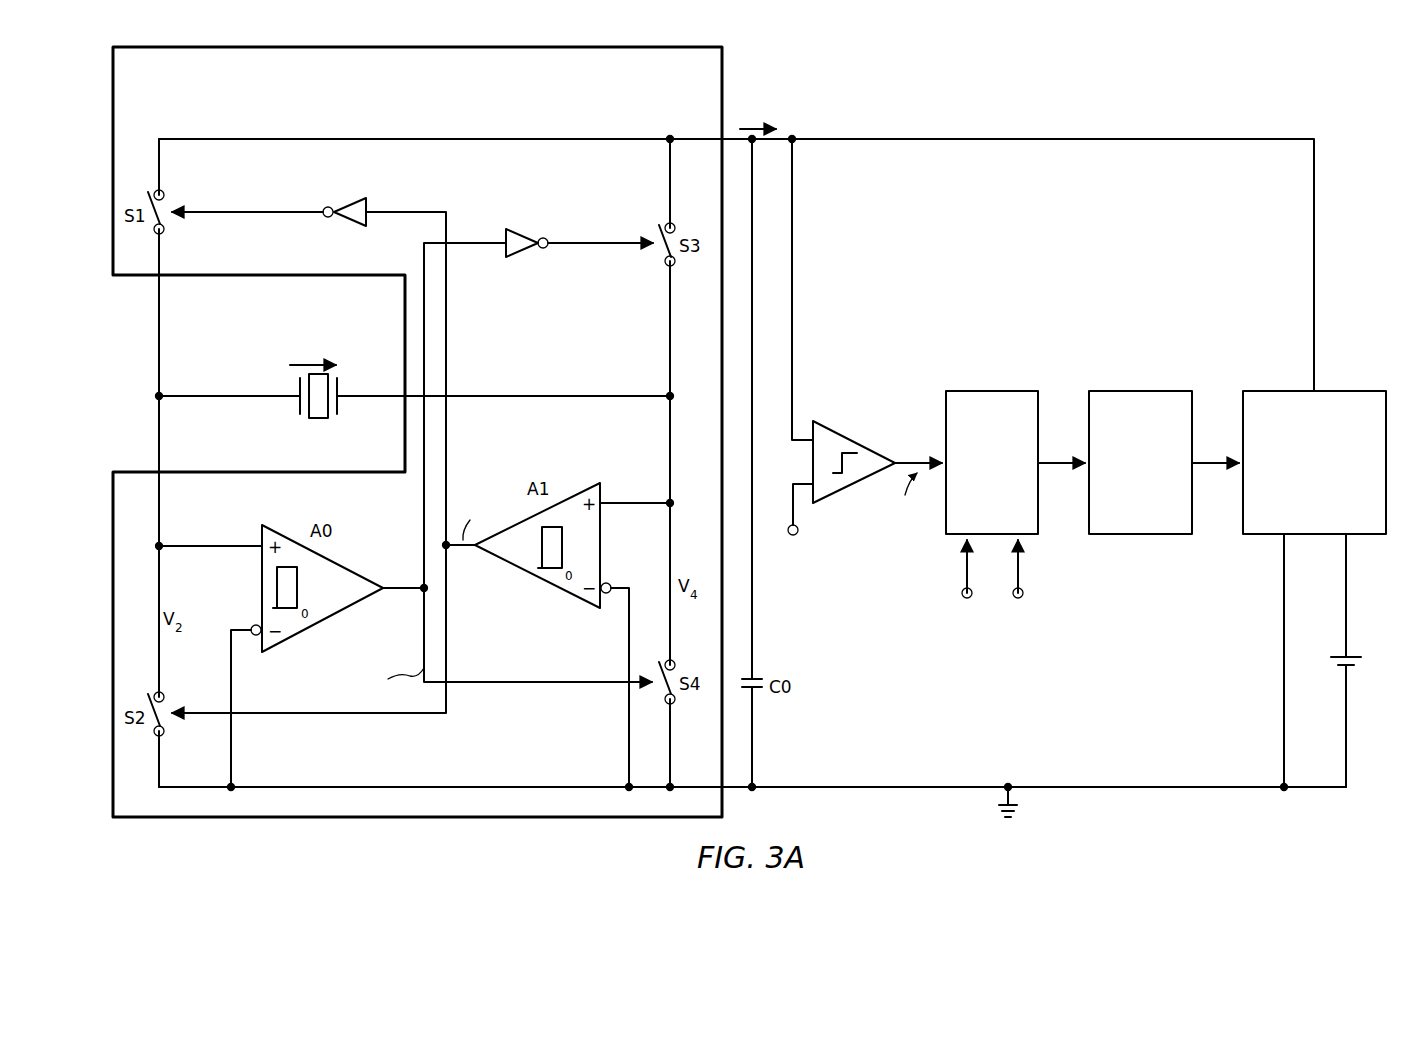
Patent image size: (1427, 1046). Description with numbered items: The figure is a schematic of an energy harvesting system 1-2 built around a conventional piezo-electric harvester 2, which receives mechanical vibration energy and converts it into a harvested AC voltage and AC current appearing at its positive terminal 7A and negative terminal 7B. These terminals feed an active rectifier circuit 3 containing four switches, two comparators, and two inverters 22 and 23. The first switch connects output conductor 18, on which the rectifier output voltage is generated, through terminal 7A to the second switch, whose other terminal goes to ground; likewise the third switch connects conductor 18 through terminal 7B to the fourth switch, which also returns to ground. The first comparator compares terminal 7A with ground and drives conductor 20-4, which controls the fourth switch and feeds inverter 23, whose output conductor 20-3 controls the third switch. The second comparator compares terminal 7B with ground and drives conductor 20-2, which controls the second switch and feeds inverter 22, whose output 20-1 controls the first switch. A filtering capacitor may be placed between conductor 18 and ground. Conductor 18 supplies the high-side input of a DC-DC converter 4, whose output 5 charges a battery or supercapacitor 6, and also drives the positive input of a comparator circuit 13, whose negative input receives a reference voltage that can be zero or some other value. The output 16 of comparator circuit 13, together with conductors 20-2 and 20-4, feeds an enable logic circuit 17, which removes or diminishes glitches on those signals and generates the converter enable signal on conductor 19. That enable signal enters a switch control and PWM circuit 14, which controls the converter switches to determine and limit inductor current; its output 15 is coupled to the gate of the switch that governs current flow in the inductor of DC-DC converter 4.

The energy harvesting system 1-2 is at (1147, 90).
The piezo-electric harvester 2 is at (298, 388).
The active rectifier circuit 3 is at (404, 822).
The DC-DC converter 4 is at (1348, 390).
The output of DC-DC converter 5 is at (1346, 565).
The battery or supercapacitor 6 is at (1362, 660).
The (+) terminal of piezo harvester 7A is at (263, 398).
The (−) terminal of piezo harvester 7B is at (362, 393).
The comparator circuit 13 is at (857, 436).
The switch control and PWM circuit 14 is at (1140, 390).
The output of control and PWM circuit 15 is at (1210, 466).
The output of comparator circuit 16 is at (912, 460).
The enable logic circuit 17 is at (993, 390).
The output conductor of active rectifier 18 is at (280, 137).
The conductor carrying enable signal EN 19 is at (1057, 470).
The output of inverter 22 20-1 is at (243, 210).
The conductor connecting output of comparator A1 20-2 is at (448, 550).
The conductor connecting output of inverter 23 20-3 is at (615, 246).
The conductor connecting output of comparator A0 20-4 is at (414, 598).
The inverter 22 is at (340, 208).
The inverter 23 is at (530, 240).